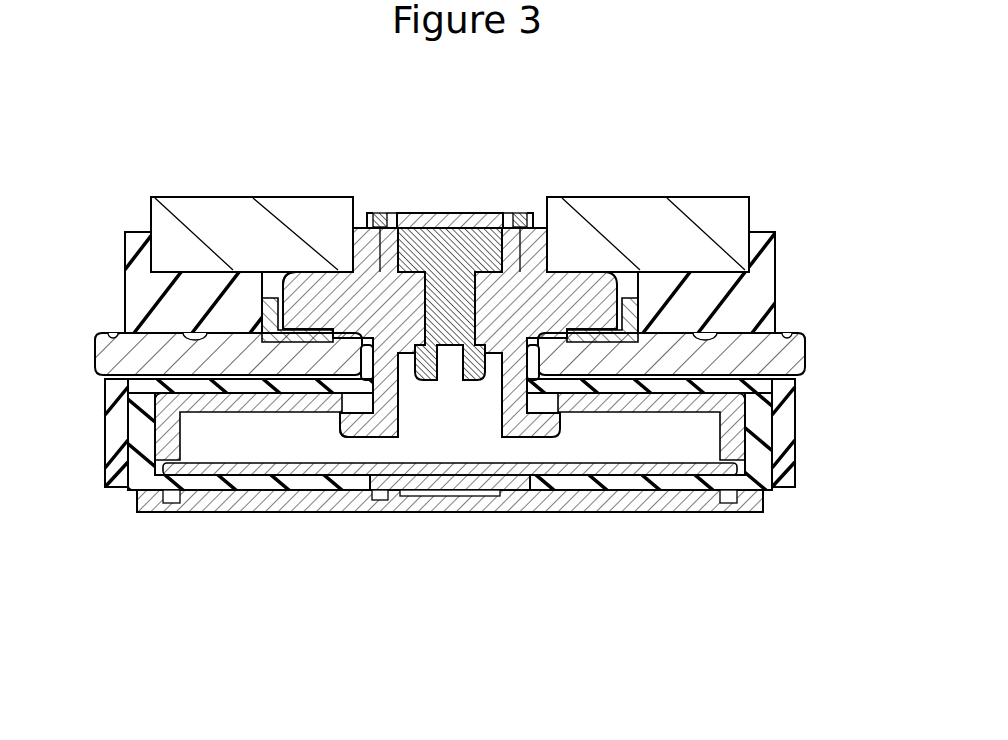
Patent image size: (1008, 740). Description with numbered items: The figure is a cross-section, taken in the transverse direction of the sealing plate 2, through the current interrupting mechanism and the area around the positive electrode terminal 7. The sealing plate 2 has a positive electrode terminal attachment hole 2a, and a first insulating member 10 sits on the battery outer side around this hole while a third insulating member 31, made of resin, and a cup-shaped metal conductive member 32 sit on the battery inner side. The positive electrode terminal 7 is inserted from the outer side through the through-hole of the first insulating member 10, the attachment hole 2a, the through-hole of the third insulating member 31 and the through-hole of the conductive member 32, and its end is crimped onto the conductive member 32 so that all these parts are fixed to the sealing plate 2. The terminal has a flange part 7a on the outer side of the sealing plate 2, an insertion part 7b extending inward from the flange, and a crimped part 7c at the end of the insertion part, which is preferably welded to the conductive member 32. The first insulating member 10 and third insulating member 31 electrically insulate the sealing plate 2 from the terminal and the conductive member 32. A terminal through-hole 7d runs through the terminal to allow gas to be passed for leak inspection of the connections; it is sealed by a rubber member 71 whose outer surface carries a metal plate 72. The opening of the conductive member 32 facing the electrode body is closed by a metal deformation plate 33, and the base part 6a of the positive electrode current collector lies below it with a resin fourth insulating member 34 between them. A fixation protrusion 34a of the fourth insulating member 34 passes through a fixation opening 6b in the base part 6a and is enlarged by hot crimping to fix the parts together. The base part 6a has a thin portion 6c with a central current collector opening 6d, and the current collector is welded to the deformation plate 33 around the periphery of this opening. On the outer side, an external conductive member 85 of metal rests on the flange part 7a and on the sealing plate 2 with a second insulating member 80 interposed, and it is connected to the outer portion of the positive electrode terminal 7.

The sealing plate 2 is at (758, 352).
The positive electrode terminal attachment hole 2a is at (303, 388).
The base part 6a is at (596, 510).
The fixation opening 6b is at (648, 510).
The thin portion 6c is at (395, 510).
The current collector opening 6d is at (420, 510).
The positive electrode terminal 7 is at (560, 268).
The flange part 7a is at (322, 292).
The insertion part 7b is at (400, 390).
The crimped part 7c is at (350, 438).
The terminal through-hole 7d is at (415, 224).
The first insulating member 10 is at (262, 325).
The third insulating member 31 is at (762, 418).
The conductive member 32 is at (222, 414).
The deformation plate 33 is at (478, 508).
The fourth insulating member 34 is at (130, 492).
The fixation protrusion 34a is at (705, 508).
The rubber member 71 is at (455, 258).
The metal plate 72 is at (490, 225).
The second insulating member 80 is at (177, 315).
The external conductive member 85 is at (208, 235).